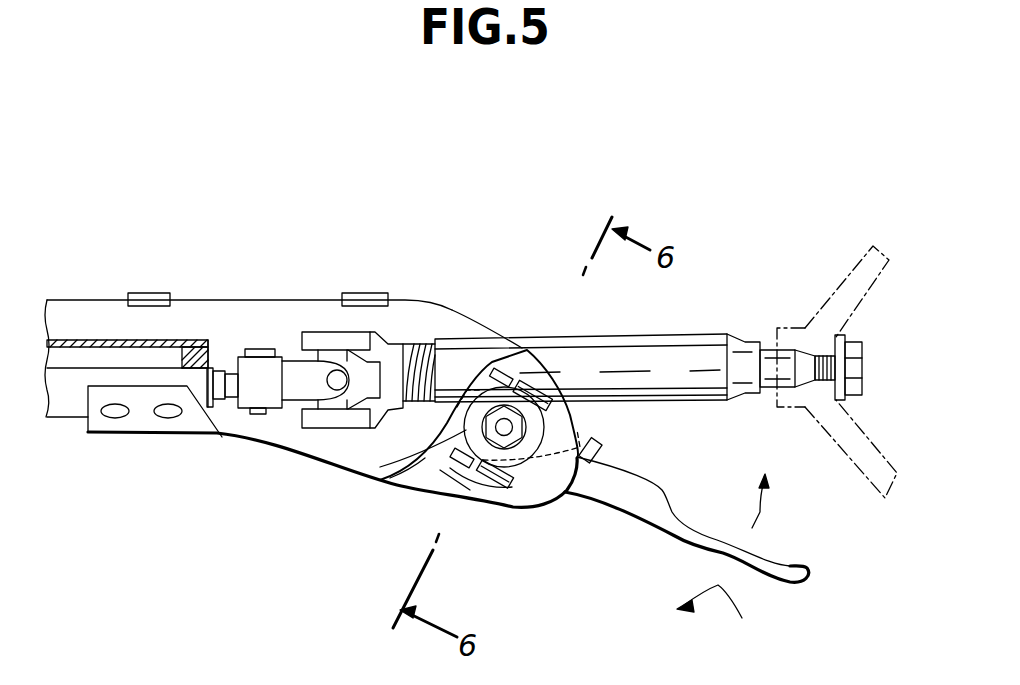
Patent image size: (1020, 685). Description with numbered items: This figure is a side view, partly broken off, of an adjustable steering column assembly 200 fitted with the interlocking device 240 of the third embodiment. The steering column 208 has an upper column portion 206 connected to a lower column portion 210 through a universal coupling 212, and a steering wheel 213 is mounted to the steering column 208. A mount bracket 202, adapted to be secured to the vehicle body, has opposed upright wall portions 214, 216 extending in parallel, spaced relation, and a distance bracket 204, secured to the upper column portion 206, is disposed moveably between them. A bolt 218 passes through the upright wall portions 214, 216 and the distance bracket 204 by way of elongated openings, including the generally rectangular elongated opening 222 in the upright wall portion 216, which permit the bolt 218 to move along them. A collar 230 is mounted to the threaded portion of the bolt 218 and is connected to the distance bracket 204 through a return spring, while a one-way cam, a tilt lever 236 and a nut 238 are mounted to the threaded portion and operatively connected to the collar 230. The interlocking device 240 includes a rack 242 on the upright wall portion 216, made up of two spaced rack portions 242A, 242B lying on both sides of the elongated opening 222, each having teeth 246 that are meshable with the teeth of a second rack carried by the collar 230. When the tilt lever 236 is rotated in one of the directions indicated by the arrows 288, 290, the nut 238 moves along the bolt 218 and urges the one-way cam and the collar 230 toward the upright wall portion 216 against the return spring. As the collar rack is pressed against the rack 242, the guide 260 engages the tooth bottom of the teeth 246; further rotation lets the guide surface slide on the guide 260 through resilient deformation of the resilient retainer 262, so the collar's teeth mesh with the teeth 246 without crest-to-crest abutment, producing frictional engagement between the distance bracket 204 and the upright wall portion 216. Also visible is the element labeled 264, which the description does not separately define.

The adjustable steering column assembly 200 is at (356, 175).
The mount bracket 202 is at (301, 298).
The distance bracket 204 is at (580, 446).
The upper column portion 206 is at (702, 336).
The steering column 208 is at (685, 313).
The lower column portion 210 is at (187, 336).
The universal coupling 212 is at (254, 330).
The steering wheel 213 is at (856, 262).
The upright wall portion 214 is at (400, 298).
The upright wall portion 216 is at (390, 478).
The bolt 218 is at (496, 427).
The elongated opening 222 is at (514, 352).
The collar 230 is at (453, 336).
The tilt lever 236 is at (673, 537).
The nut 238 is at (576, 468).
The interlocking device 240 is at (503, 358).
The rack 242 is at (483, 505).
The rack portion 242A is at (498, 490).
The rack portion 242B is at (455, 468).
The teeth 246 is at (450, 472).
The guide 260 is at (480, 340).
The resilient retainer 262 is at (383, 482).
The cam surface 264 is at (524, 340).
The arrow 288 is at (760, 512).
The arrow 290 is at (728, 621).